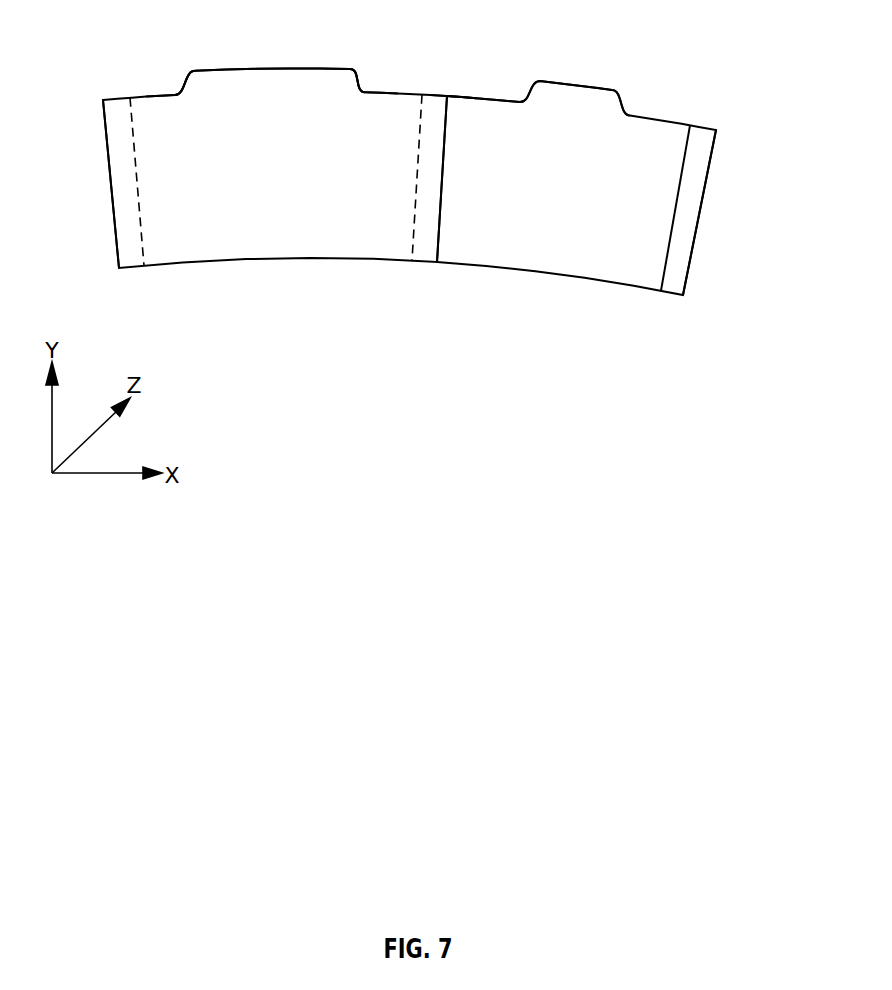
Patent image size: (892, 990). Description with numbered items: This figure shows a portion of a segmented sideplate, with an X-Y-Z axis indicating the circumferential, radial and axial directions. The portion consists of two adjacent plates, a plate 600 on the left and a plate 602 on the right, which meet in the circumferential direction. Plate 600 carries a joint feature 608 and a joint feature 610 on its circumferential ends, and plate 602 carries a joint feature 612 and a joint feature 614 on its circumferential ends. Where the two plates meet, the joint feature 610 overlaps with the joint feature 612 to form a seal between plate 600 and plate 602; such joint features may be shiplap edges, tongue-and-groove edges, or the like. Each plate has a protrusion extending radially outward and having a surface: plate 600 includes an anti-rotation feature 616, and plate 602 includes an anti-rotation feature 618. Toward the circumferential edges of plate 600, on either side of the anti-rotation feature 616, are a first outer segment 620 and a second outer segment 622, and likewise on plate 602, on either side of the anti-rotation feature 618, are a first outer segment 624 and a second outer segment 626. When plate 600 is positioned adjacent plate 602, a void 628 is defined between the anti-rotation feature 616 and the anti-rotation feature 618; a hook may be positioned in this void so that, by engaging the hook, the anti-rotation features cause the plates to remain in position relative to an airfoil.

The plate 600 is at (278, 200).
The plate 602 is at (578, 201).
The joint feature 608 is at (128, 268).
The joint feature 610 is at (419, 250).
The joint feature 612 is at (420, 262).
The joint feature 614 is at (682, 272).
The anti-rotation feature 616 is at (268, 69).
The anti-rotation feature 618 is at (583, 86).
The first outer segment 620 is at (167, 97).
The second outer segment 622 is at (393, 95).
The first outer segment 624 is at (483, 100).
The second outer segment 626 is at (660, 120).
The void 628 is at (461, 92).